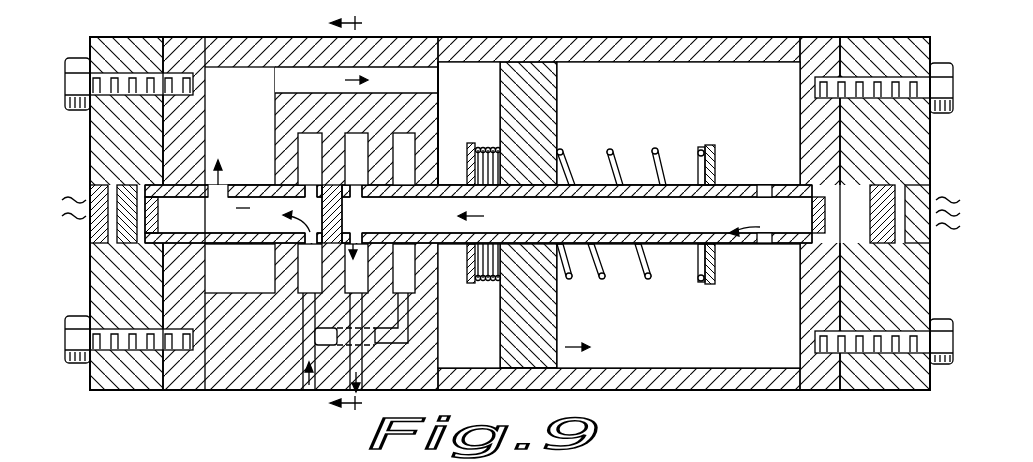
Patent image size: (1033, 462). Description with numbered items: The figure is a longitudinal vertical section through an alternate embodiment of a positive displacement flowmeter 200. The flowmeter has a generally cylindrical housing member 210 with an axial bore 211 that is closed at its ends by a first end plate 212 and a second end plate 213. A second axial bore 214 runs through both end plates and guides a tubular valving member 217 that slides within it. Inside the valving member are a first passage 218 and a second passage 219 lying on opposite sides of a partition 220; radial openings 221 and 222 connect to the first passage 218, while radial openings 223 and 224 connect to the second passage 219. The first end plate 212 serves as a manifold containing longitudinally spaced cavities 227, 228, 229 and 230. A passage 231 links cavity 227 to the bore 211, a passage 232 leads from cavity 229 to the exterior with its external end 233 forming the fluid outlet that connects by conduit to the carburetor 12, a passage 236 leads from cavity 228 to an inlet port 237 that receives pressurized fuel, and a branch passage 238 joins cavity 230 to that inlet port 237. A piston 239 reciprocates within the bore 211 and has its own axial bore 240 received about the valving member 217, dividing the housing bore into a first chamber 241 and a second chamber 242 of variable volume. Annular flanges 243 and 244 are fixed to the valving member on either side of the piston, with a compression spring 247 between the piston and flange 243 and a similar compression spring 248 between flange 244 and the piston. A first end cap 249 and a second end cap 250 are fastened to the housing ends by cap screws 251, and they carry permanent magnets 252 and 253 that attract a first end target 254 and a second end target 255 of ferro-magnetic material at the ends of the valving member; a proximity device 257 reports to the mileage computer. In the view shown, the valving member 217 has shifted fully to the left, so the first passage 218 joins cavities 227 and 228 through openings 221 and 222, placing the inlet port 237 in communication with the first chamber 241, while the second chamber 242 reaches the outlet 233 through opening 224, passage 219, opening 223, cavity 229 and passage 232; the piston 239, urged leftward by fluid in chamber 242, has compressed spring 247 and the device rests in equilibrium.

The positive displacement flowmeter 200 is at (742, 402).
The housing member 210 is at (620, 392).
The axial bore 211 is at (678, 306).
The first end plate 212 is at (440, 114).
The second end plate 213 is at (802, 118).
The second axial bore 214 is at (426, 188).
The valving member 217 is at (765, 245).
The first passage 218 is at (242, 196).
The second passage 219 is at (609, 220).
The partition 220 is at (335, 222).
The radial opening 221 is at (243, 210).
The radial opening 222 is at (312, 182).
The radial opening 223 is at (356, 182).
The radial opening 224 is at (770, 170).
The cavity 227 is at (240, 180).
The cavity 228 is at (305, 272).
The cavity 229 is at (303, 325).
The cavity 230 is at (408, 288).
The passage 231 is at (285, 80).
The passage 232 is at (363, 350).
The external end of passage 232 233 is at (360, 372).
The passage 236 is at (315, 338).
The inlet port 237 is at (308, 392).
The passage 238 is at (438, 340).
The piston 239 is at (557, 105).
The axial bore of piston 240 is at (557, 286).
The first chamber 241 is at (469, 123).
The second chamber 242 is at (678, 123).
The annular flange 243 is at (466, 288).
The annular flange 244 is at (713, 284).
The compression spring 247 is at (495, 145).
The compression spring 248 is at (660, 148).
The first end cap 249 is at (100, 153).
The second end cap 250 is at (930, 152).
The cap screws 251 is at (86, 110).
The permanent magnet 252 is at (150, 172).
The permanent magnet 253 is at (880, 186).
The first end target 254 is at (150, 238).
The second end target 255 is at (812, 206).
The proximity device 257 is at (930, 240).
The carburetor 12 is at (358, 214).